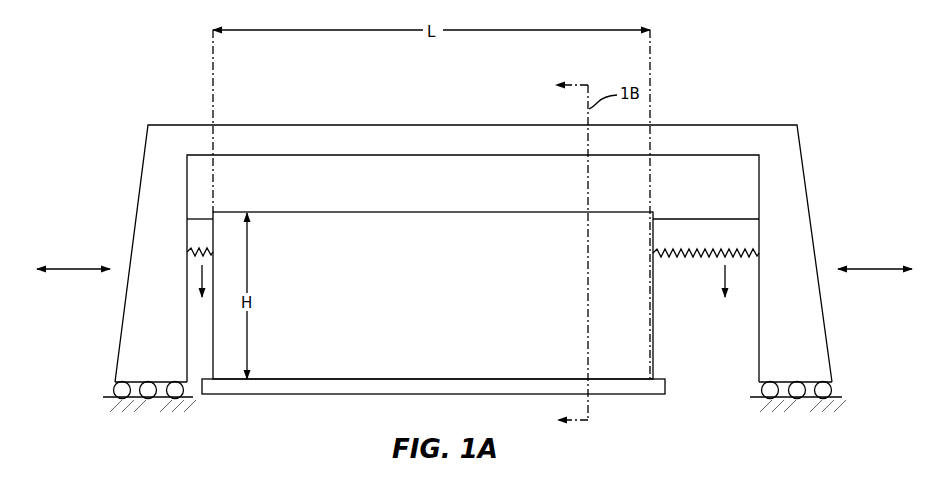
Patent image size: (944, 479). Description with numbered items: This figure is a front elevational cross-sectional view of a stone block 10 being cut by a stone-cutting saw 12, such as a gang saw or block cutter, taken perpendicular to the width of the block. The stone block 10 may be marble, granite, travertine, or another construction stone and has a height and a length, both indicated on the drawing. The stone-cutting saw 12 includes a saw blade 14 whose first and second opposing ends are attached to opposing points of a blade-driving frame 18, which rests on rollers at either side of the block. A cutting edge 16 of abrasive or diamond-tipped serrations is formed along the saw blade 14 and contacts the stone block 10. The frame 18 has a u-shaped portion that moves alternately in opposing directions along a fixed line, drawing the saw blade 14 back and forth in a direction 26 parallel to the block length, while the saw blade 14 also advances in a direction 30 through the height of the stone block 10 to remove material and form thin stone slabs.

The stone block 10 is at (442, 305).
The stone-cutting saw 12 is at (800, 99).
The saw blade 14 is at (711, 245).
The cutting edge 16 is at (675, 255).
The frame 18 is at (170, 241).
The direction 26 is at (77, 268).
The direction 30 is at (201, 279).